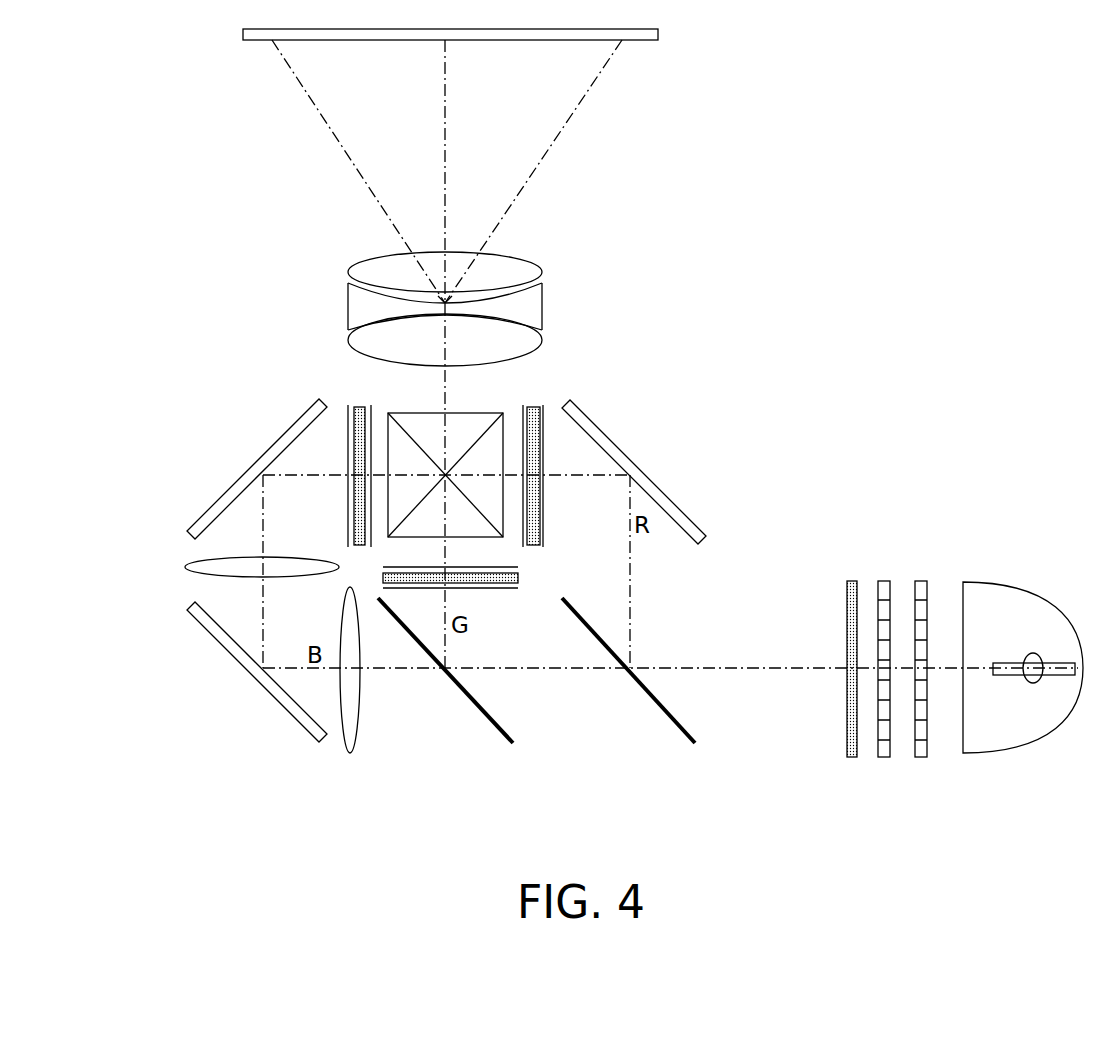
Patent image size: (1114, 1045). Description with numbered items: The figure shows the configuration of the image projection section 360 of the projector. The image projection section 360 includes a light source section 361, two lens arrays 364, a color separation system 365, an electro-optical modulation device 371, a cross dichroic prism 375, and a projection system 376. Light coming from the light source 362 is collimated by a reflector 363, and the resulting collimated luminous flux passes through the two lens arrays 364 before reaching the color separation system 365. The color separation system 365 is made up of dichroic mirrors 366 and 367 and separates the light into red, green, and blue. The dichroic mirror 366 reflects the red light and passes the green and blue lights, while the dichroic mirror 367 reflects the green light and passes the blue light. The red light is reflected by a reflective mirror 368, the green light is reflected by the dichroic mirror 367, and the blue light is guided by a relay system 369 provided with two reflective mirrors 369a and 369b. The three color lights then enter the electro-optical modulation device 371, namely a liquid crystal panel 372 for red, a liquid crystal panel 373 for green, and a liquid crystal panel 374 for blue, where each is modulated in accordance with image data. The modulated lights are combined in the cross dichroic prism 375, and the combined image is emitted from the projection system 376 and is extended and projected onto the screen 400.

The screen 400 is at (627, 40).
The projection system 376 is at (543, 297).
The cross dichroic prism 375 is at (427, 422).
The liquid crystal panel for blue color 374 is at (357, 405).
The electro-optical modulation device 371 is at (612, 462).
The liquid crystal panel for red color 372 is at (543, 553).
The liquid crystal panel for green color 373 is at (522, 583).
The reflective mirror 368 is at (632, 458).
The image projection section 360 is at (770, 470).
The relay system 369 is at (220, 573).
The reflective mirror 369a is at (280, 713).
The reflective mirror 369b is at (262, 437).
The color separation system 365 is at (577, 718).
The dichroic mirror 367 is at (500, 725).
The dichroic mirror 366 is at (678, 713).
The lens arrays 364 is at (921, 581).
The light source section 361 is at (980, 598).
The reflector 363 is at (1005, 587).
The light source 362 is at (1033, 683).